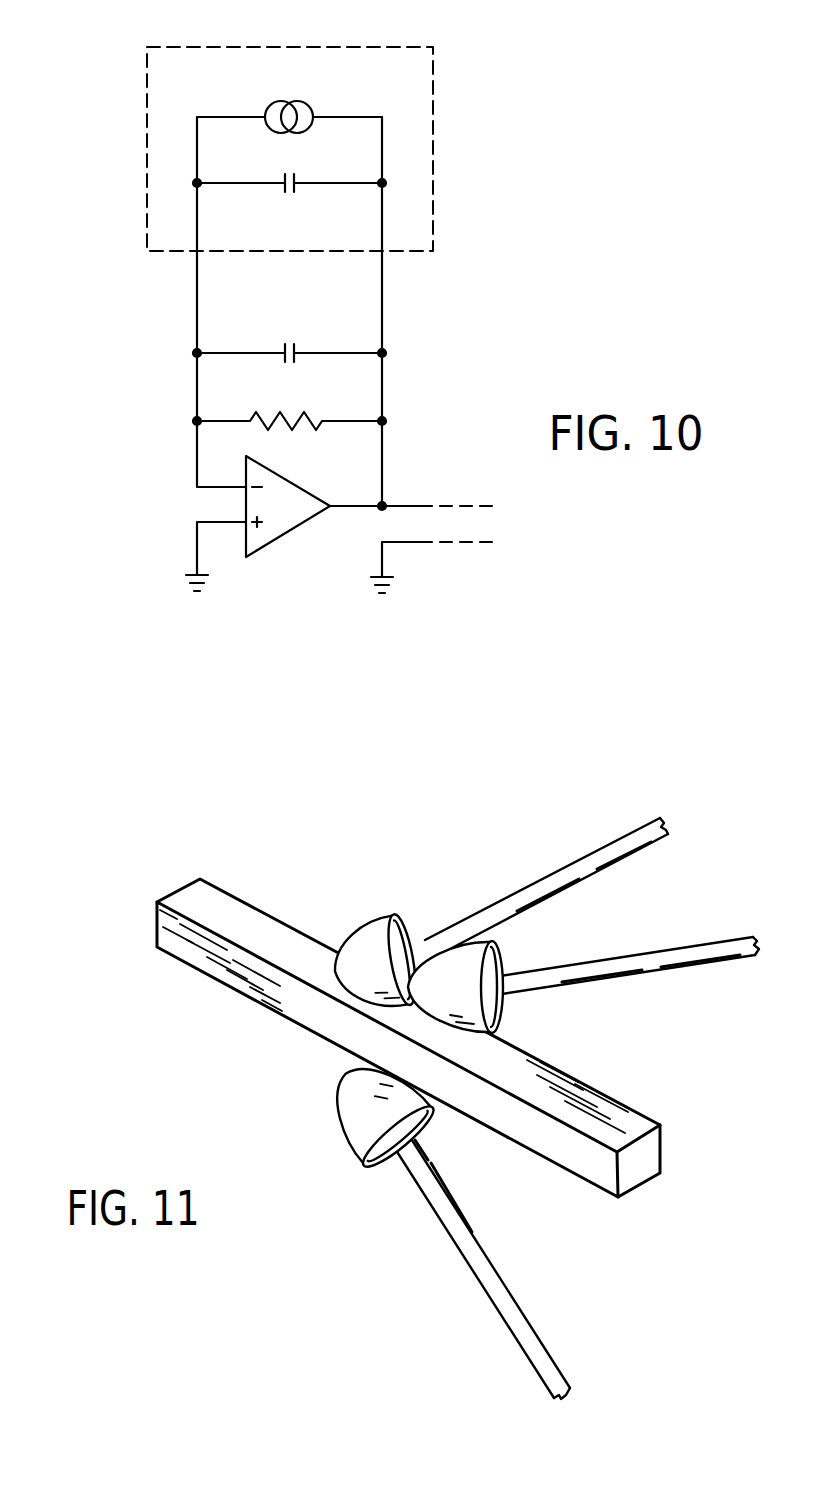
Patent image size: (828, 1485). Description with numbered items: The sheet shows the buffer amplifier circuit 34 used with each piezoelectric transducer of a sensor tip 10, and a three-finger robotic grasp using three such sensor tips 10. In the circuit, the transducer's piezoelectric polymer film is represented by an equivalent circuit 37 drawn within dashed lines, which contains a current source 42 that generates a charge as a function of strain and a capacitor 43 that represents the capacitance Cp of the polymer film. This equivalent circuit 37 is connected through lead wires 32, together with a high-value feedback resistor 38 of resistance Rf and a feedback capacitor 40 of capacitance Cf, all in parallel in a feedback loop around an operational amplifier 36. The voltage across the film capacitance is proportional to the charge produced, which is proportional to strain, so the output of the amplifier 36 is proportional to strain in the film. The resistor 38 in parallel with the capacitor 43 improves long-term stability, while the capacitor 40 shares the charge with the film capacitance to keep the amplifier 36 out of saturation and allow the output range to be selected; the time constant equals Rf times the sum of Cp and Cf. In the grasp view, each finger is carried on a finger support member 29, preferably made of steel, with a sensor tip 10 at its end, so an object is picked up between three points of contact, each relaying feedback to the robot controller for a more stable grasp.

In FIG. 11, the sensor tip 10 is at (337, 1075).
In FIG. 11, the finger support member 29 is at (597, 957).
In FIG. 10, the lead wires 32 is at (197, 315).
In FIG. 10, the buffer amplifier circuit 34 is at (190, 460).
In FIG. 10, the operational amplifier 36 is at (290, 532).
In FIG. 10, the equivalent circuit 37 is at (435, 108).
In FIG. 10, the feedback resistor 38 is at (270, 413).
In FIG. 10, the feedback capacitor 40 is at (285, 347).
In FIG. 10, the current source 42 is at (307, 105).
In FIG. 10, the capacitor 43 is at (293, 193).